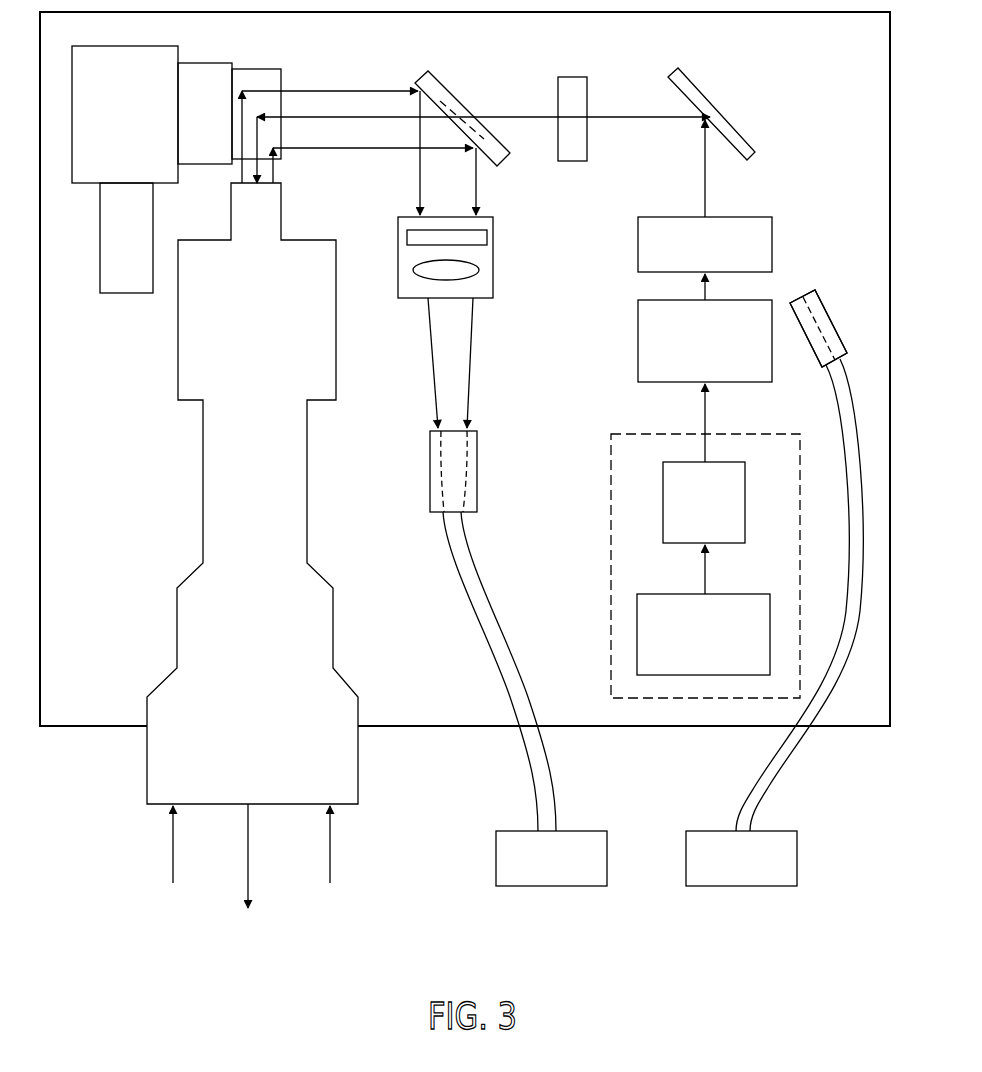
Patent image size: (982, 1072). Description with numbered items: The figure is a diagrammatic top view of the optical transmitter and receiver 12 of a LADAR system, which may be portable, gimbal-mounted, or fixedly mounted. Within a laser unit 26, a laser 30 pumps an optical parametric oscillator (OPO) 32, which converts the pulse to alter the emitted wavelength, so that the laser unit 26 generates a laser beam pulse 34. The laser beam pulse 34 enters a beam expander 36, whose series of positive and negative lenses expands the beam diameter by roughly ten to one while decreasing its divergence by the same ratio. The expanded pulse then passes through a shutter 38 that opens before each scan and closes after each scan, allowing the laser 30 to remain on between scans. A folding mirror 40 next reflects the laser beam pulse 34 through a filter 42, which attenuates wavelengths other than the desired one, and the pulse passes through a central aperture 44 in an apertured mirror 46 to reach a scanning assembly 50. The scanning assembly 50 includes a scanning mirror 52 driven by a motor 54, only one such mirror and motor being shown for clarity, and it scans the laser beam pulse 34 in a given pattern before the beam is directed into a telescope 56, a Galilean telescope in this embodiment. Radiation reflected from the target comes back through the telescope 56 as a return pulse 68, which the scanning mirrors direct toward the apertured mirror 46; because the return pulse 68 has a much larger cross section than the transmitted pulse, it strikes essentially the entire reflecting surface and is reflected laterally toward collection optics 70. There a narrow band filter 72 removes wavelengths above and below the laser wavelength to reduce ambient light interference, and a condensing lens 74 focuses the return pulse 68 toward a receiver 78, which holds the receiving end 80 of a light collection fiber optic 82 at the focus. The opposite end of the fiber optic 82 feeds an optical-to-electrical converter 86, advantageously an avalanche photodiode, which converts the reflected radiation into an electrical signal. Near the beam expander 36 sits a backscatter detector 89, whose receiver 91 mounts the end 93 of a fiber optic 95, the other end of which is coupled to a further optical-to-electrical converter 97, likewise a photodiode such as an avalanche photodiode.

The optical transmitter and receiver 12 is at (123, 773).
The laser unit 26 is at (611, 686).
The laser 30 is at (637, 636).
The optical parametric oscillator (OPO) 32 is at (663, 510).
The laser beam pulse 34 is at (257, 143).
The beam expander 36 is at (638, 330).
The shutter 38 is at (638, 242).
The folding mirror 40 is at (743, 135).
The filter 42 is at (563, 77).
The central aperture 44 is at (472, 110).
The apertured mirror 46 is at (443, 84).
The scanning assembly 50 is at (120, 46).
The scanning mirror 52 is at (259, 69).
The motor 54 is at (200, 64).
The telescope 56 is at (178, 362).
The return pulse 68 is at (241, 172).
The collection optics 70 is at (398, 234).
The narrow band filter 72 is at (487, 235).
The condensing lens 74 is at (477, 266).
The receiver 78 is at (430, 472).
The receiving end 80 is at (453, 428).
The light collection fiber optic 82 is at (527, 747).
The optical-to-electrical converter 86 is at (535, 886).
The backscatter detector 89 is at (853, 300).
The receiver 91 is at (833, 327).
The end 93 is at (803, 292).
The fiber optic 95 is at (782, 749).
The optical-to-electrical converter 97 is at (753, 886).